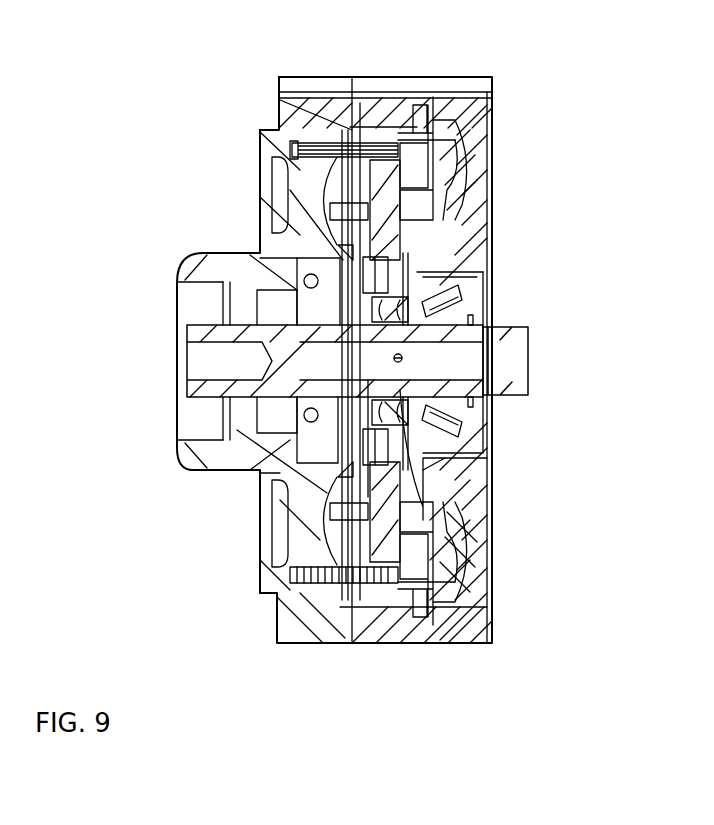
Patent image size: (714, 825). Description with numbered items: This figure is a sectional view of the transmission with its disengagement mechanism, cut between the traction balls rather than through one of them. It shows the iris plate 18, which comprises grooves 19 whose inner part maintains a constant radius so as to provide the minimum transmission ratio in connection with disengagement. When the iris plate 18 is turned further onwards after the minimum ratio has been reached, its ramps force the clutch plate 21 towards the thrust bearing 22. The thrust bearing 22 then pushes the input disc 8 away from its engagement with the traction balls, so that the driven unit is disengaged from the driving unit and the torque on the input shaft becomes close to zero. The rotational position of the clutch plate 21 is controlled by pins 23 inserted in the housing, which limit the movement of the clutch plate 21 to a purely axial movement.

The input disc 8 is at (338, 263).
The iris plate 18 is at (457, 205).
The grooves 19 is at (453, 155).
The clutch plate 21 is at (385, 223).
The thrust bearing 22 is at (393, 280).
The pins 23 is at (293, 143).